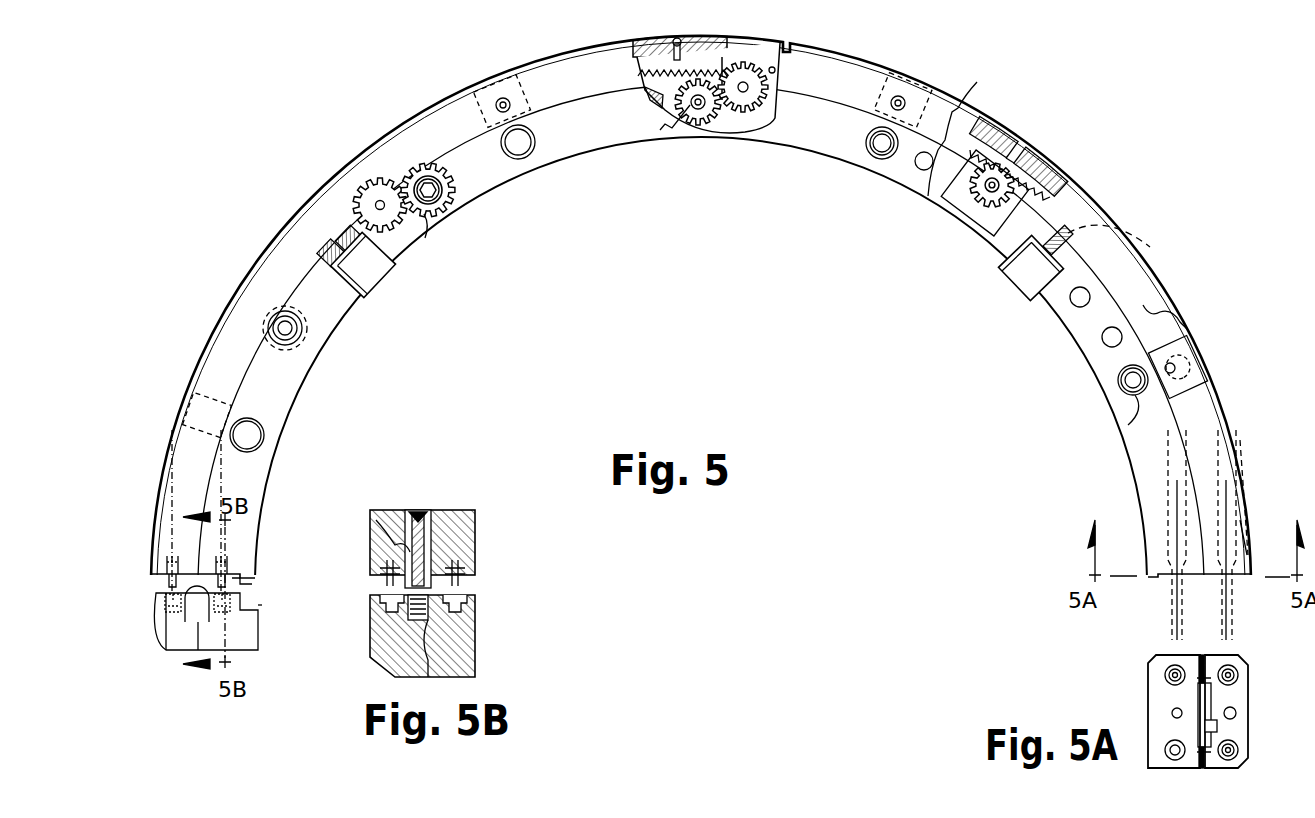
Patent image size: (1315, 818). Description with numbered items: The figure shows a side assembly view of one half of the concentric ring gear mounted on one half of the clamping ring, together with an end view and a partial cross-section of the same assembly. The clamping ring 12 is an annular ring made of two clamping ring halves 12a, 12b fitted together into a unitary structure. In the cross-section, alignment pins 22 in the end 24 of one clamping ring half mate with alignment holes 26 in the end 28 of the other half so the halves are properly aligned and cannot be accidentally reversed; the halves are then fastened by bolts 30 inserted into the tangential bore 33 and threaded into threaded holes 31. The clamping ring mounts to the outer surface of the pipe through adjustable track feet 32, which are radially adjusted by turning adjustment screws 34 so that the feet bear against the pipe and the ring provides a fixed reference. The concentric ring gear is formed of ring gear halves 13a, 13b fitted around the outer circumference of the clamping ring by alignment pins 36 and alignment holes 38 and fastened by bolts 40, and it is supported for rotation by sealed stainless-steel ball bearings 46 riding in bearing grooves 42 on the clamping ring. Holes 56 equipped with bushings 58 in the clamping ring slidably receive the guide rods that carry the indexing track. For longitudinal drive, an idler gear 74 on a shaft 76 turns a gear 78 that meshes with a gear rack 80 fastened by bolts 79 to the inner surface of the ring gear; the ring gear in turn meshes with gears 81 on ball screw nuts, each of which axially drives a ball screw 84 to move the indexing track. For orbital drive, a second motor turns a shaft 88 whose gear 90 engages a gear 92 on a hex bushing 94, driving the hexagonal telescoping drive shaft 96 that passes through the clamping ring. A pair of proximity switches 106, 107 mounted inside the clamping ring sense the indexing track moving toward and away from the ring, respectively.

In FIG. 5, the clamping ring 12 is at (878, 152).
In FIG. 5, the clamping ring half 12a is at (270, 407).
In FIG. 5B, the clamping ring half 12a is at (476, 535).
In FIG. 5, the clamping ring half 12b is at (258, 646).
In FIG. 5B, the clamping ring half 12b is at (476, 660).
In FIG. 5, the ring gear half 13a is at (216, 352).
In FIG. 5, the ring gear half 13b is at (176, 650).
In FIG. 5, the alignment pins 22 is at (242, 586).
In FIG. 5B, the alignment pins 22 is at (385, 576).
In FIG. 5, the end of clamping ring half 24 is at (230, 578).
In FIG. 5B, the end of clamping ring half 24 is at (440, 525).
In FIG. 5, the alignment holes 26 is at (256, 622).
In FIG. 5B, the alignment holes 26 is at (392, 606).
In FIG. 5A, the alignment holes 26 is at (1168, 668).
In FIG. 5, the end of clamping ring half 28 is at (209, 612).
In FIG. 5B, the end of clamping ring half 28 is at (476, 630).
In FIG. 5B, the bolts 30 is at (430, 512).
In FIG. 5A, the bolts 30 is at (1172, 714).
In FIG. 5B, the threaded holes 31 is at (428, 676).
In FIG. 5, the track feet 32 is at (366, 291).
In FIG. 5B, the tangential bore 33 is at (370, 525).
In FIG. 5, the adjustment screws 34 is at (338, 246).
In FIG. 5, the alignment pins 36 is at (168, 578).
In FIG. 5, the alignment holes 38 is at (166, 606).
In FIG. 5A, the alignment holes 38 is at (1239, 672).
In FIG. 5A, the bolts 40 is at (1237, 713).
In FIG. 5A, the bearing grooves 42 is at (1204, 668).
In FIG. 5, the ball bearings 46 is at (926, 98).
In FIG. 5, the holes 56 is at (922, 168).
In FIG. 5, the bushings 58 is at (882, 152).
In FIG. 5, the idler gear 74 is at (740, 106).
In FIG. 5, the shaft 76 is at (672, 128).
In FIG. 5, the gear 78 is at (690, 101).
In FIG. 5, the bolts 79 is at (1035, 152).
In FIG. 5, the gear rack 80 is at (640, 78).
In FIG. 5A, the gear rack 80 is at (1217, 727).
In FIG. 5, the gears 81 is at (982, 214).
In FIG. 5, the ball screw 84 is at (975, 192).
In FIG. 5, the shaft 88 is at (368, 188).
In FIG. 5, the gear 90 is at (380, 200).
In FIG. 5, the gear 92 is at (425, 220).
In FIG. 5, the hex bushing 94 is at (456, 196).
In FIG. 5, the hexagonal telescoping drive shaft 96 is at (440, 194).
In FIG. 5, the proximity switch 106 is at (968, 100).
In FIG. 5, the proximity switch 107 is at (1122, 337).